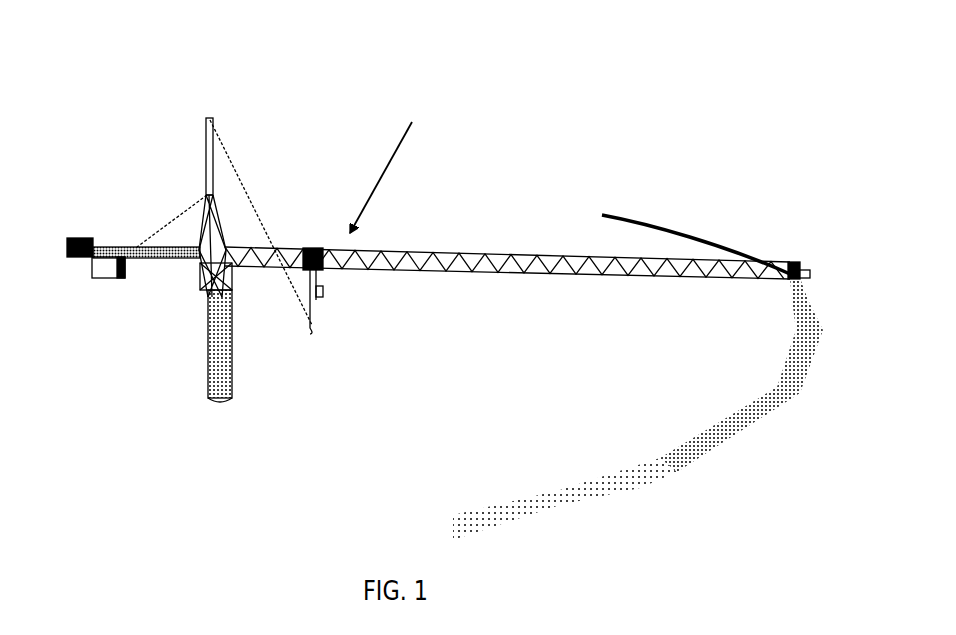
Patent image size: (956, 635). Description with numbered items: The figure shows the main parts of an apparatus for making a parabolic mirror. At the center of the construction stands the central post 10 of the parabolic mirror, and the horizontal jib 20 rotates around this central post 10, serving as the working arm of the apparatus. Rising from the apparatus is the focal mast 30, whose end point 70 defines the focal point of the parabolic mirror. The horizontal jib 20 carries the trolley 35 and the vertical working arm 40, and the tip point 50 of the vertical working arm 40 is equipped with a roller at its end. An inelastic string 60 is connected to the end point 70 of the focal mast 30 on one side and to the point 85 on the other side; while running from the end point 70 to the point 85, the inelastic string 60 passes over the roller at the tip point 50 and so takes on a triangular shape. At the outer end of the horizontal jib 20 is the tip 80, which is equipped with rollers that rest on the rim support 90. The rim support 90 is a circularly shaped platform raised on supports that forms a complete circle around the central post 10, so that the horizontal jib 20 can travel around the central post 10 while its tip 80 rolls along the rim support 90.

The central post 10 is at (205, 360).
The horizontal jib 20 is at (614, 254).
The focal mast 30 is at (198, 160).
The trolley 35 is at (316, 245).
The vertical working arm 40 is at (319, 292).
The tip point of the vertical working arm 50 is at (312, 331).
The inelastic string 60 is at (236, 157).
The end point of the focal mast 70 is at (205, 112).
The tip of the horizontal jib 80 is at (796, 260).
The connection point of the inelastic string 85 is at (390, 159).
The rim support 90 is at (731, 443).